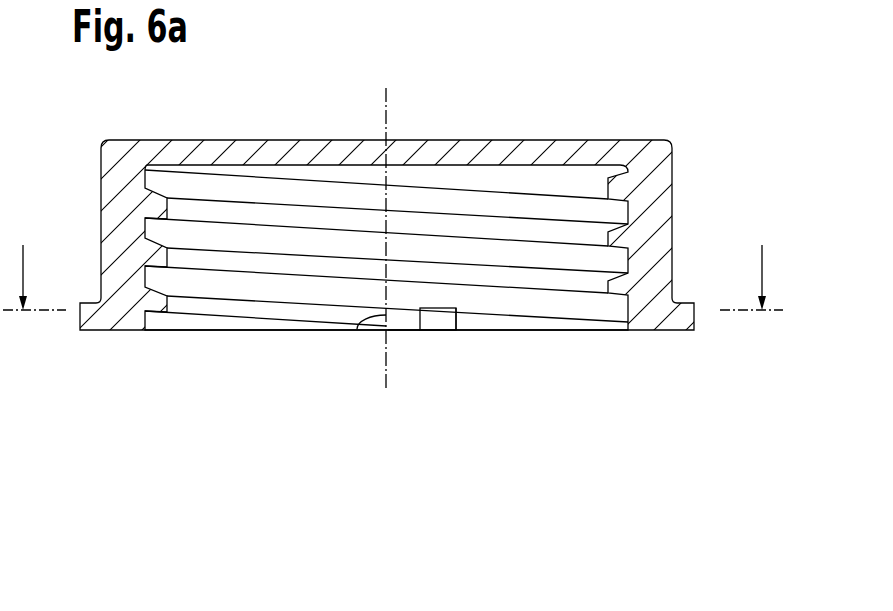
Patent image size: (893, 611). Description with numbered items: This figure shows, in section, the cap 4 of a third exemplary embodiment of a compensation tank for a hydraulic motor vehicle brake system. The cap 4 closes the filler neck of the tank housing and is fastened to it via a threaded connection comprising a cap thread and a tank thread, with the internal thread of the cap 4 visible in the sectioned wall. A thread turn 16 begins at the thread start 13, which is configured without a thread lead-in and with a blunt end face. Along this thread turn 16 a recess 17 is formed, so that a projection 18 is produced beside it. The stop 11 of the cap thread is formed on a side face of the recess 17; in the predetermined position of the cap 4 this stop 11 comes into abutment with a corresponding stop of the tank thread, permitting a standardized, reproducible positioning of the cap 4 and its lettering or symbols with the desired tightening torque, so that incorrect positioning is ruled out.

The cap 4 is at (562, 150).
The thread turn 16 is at (238, 308).
The stop 11 is at (359, 329).
The recess 17 is at (407, 322).
The projection 18 is at (443, 322).
The thread start 13 is at (482, 321).